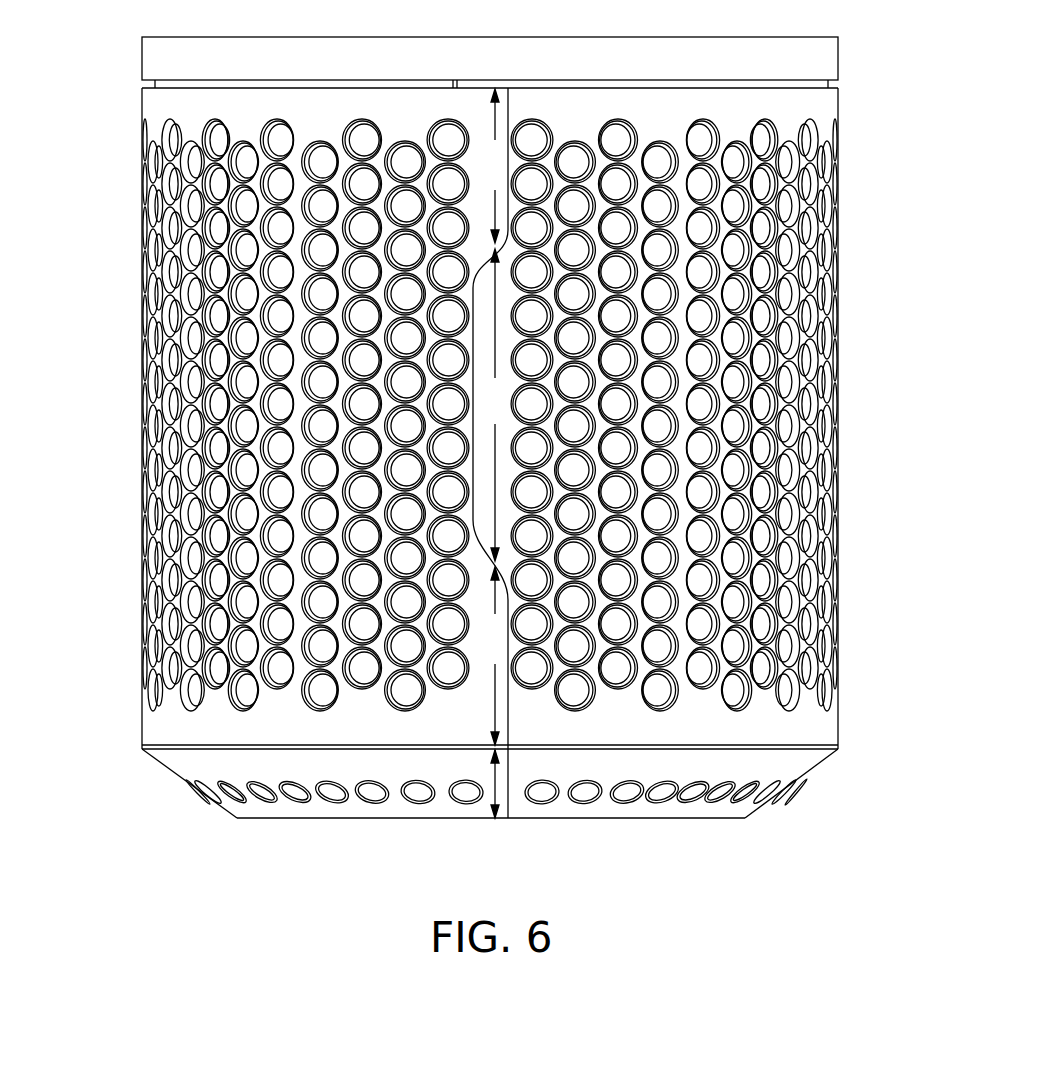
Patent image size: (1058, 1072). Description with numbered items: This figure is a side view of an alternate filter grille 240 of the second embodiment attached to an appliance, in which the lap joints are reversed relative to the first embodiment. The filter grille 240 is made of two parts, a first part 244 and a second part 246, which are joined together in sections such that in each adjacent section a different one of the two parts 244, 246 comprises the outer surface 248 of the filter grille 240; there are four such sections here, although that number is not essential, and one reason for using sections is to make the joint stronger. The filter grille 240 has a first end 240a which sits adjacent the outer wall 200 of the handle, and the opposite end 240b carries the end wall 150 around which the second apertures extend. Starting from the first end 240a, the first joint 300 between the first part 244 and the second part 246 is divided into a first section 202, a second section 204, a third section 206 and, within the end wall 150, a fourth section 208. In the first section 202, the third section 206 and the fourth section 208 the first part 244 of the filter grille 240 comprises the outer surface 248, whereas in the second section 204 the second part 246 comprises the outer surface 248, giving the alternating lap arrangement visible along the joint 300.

The outer wall 200 is at (818, 70).
The filter grille 240 is at (866, 261).
The first end 240a is at (128, 85).
The bottom end of basket 240b is at (224, 806).
The first part 244 is at (424, 127).
The second part 246 is at (599, 127).
The first section 202 is at (491, 166).
The second section 204 is at (491, 405).
The third section 206 is at (491, 656).
The fourth section 208 is at (502, 784).
The outer surface 248 is at (818, 731).
The end wall 150 is at (810, 803).
The first joint 300 is at (510, 735).